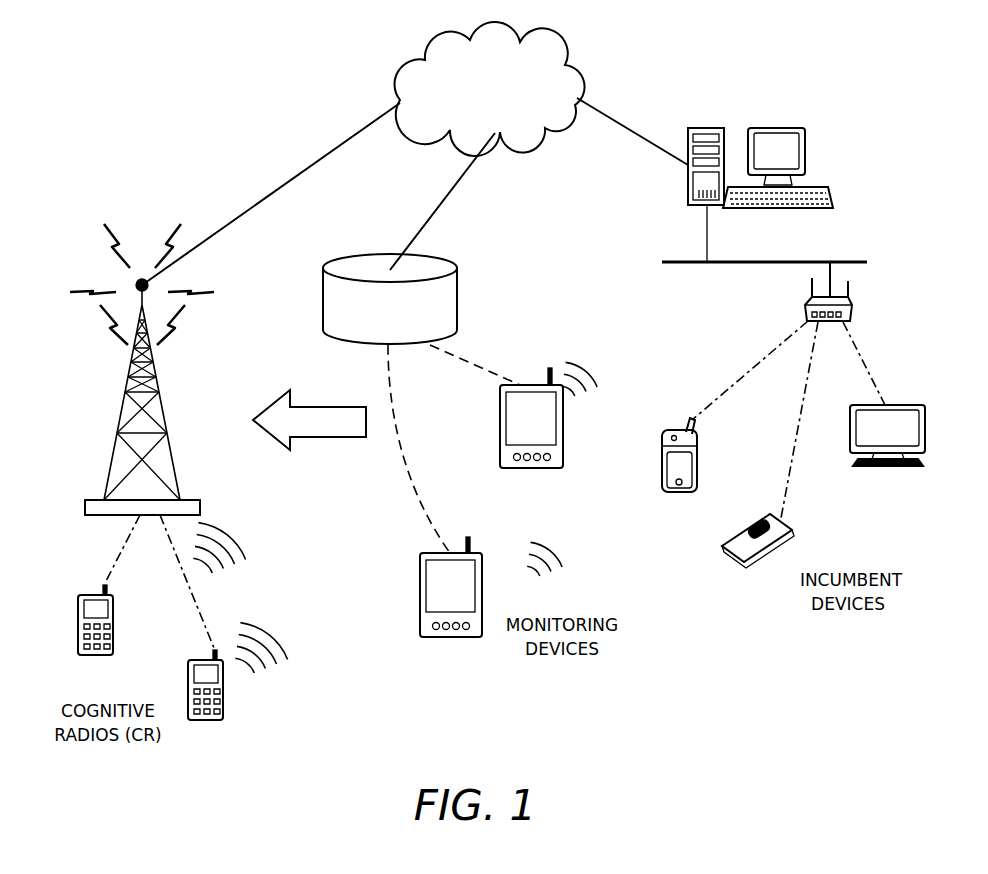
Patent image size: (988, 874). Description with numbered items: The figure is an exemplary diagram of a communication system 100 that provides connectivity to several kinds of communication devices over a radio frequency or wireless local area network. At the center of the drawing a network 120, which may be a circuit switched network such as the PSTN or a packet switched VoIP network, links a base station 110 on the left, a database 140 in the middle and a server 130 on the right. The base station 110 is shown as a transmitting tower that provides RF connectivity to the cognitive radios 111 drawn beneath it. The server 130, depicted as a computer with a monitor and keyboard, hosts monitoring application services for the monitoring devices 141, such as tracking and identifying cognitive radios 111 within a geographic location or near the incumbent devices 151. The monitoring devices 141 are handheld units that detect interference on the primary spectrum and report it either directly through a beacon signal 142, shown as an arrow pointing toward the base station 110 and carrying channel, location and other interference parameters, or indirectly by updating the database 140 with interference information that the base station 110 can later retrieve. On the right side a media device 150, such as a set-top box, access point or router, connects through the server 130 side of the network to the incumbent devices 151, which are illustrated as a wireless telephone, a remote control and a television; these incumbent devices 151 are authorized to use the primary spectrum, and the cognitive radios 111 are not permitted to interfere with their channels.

The communication system 100 is at (146, 43).
The base station 110 is at (118, 434).
The cognitive radio 111 is at (78, 626).
The network 120 is at (399, 82).
The server 130 is at (778, 128).
The database 140 is at (323, 285).
The monitoring device 141 is at (500, 427).
The beacon signal 142 is at (326, 438).
The media device 150 is at (805, 303).
The incumbent device 151 is at (886, 467).